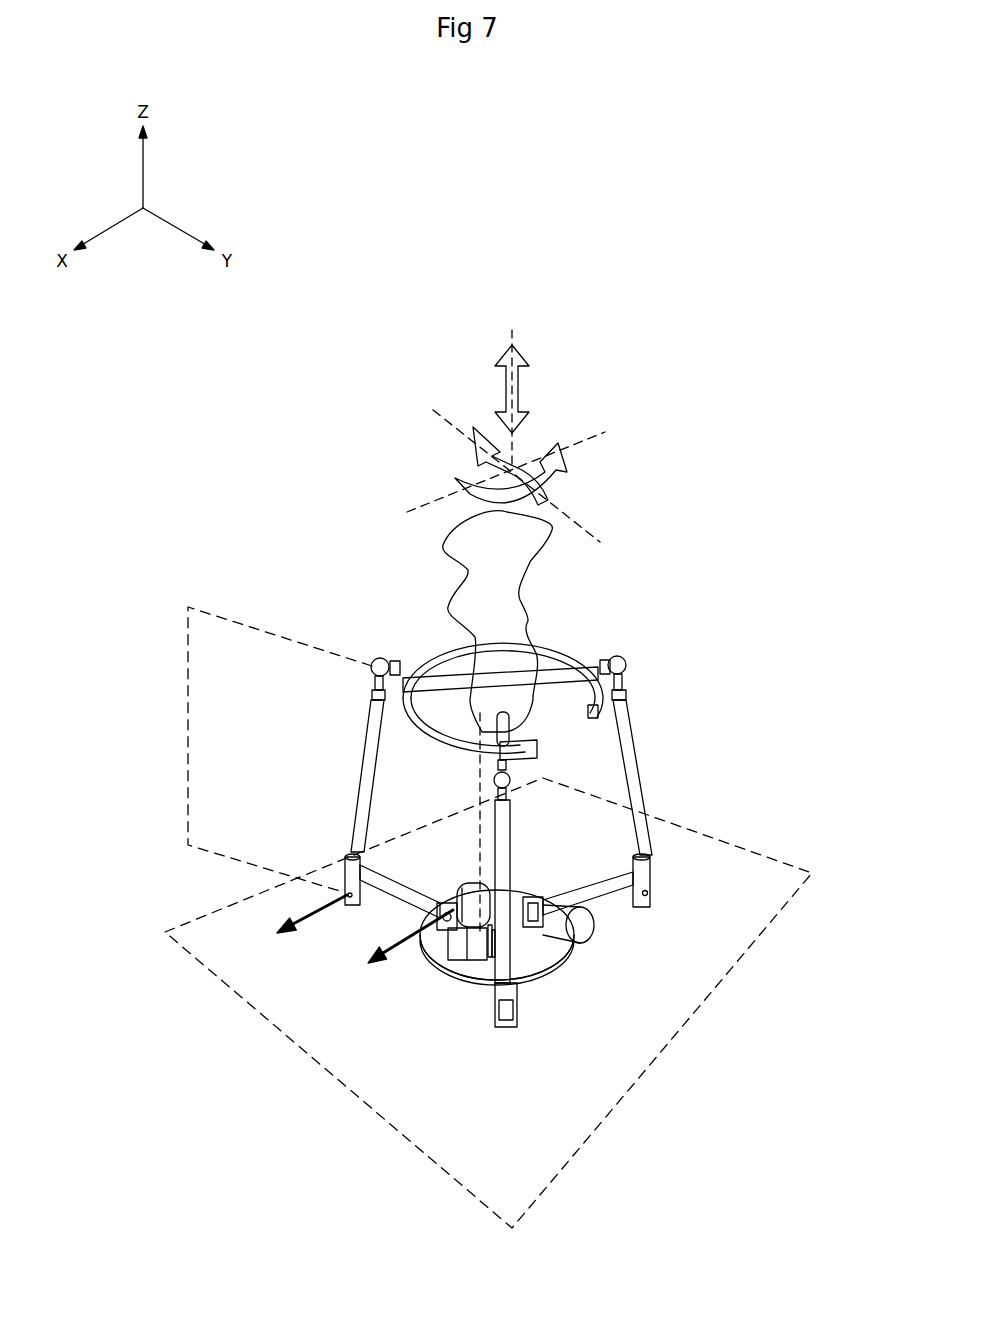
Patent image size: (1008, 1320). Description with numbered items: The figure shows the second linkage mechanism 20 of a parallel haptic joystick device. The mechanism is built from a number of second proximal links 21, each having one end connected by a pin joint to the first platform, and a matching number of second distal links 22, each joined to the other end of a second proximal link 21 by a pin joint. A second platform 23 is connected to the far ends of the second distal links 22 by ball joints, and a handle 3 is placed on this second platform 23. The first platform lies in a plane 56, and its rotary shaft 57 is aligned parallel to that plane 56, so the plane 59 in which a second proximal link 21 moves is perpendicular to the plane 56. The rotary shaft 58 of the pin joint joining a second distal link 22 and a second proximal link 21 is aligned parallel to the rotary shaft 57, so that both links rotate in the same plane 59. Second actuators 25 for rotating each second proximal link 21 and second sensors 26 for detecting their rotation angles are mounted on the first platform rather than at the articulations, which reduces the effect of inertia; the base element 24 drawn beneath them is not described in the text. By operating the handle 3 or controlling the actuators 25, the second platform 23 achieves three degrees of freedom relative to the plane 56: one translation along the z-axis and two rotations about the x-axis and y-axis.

The handle 3 is at (505, 622).
The second linkage mechanism 20 is at (497, 754).
The second proximal link 21 is at (648, 860).
The second distal link 22 is at (632, 757).
The second platform 23 is at (573, 653).
The base plate 24 is at (533, 957).
The second actuator 25 is at (480, 952).
The second sensor 26 is at (457, 960).
The plane 56 is at (760, 880).
The rotary shaft 57 is at (392, 962).
The rotary shaft 58 is at (288, 940).
The plane 59 is at (238, 628).